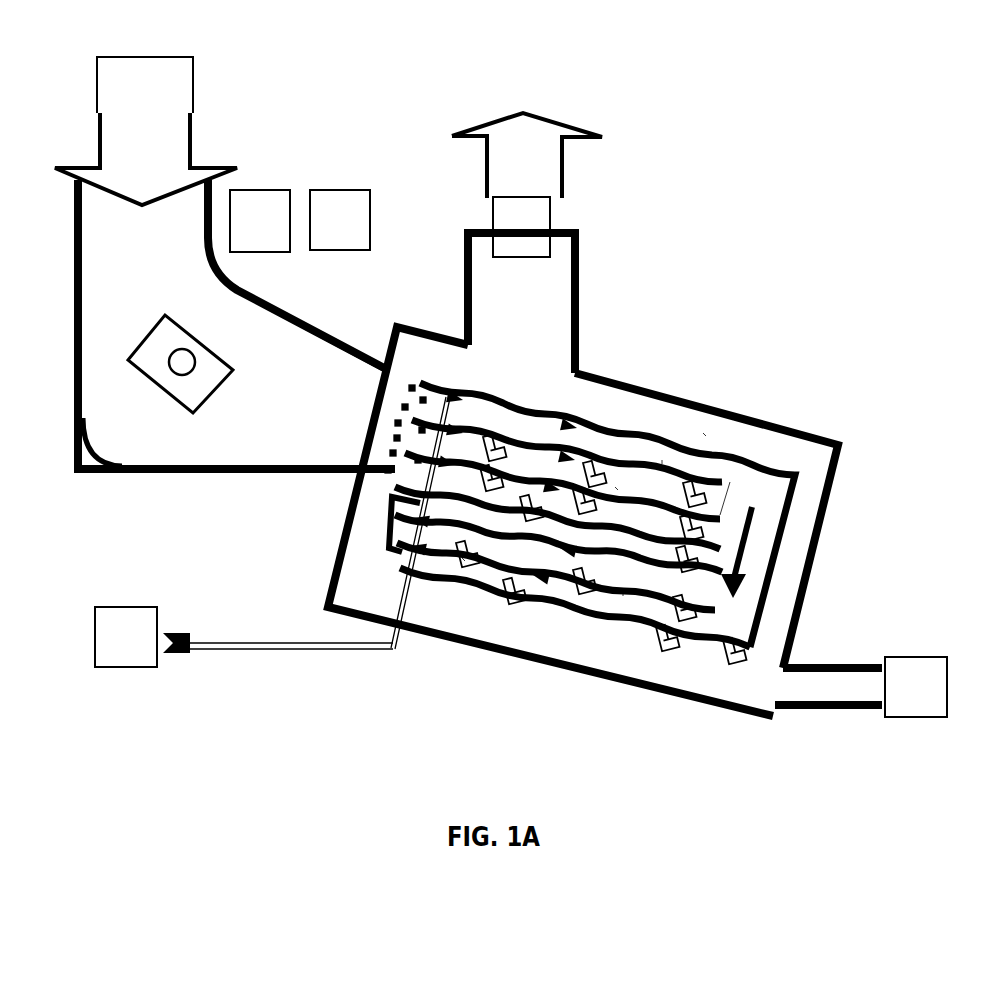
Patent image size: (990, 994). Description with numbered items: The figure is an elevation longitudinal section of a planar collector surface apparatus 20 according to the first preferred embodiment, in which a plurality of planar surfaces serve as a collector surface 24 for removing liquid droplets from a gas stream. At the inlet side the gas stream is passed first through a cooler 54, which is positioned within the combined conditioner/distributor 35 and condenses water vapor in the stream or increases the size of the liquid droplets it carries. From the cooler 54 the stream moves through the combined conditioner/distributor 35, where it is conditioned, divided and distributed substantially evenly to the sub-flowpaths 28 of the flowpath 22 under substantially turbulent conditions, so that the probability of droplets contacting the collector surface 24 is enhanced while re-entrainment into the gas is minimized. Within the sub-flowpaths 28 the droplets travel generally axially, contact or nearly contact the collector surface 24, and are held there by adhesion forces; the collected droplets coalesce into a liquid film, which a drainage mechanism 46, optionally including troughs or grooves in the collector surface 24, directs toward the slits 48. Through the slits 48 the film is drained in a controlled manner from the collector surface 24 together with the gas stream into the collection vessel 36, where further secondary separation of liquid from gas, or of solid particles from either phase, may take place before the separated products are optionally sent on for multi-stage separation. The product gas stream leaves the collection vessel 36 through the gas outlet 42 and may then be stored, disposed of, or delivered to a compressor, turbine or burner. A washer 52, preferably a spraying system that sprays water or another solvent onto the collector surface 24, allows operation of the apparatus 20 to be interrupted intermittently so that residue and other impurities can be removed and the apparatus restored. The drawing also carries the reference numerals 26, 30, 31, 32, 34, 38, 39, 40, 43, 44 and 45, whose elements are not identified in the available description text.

The planar collector surface apparatus 20 is at (690, 348).
The flowpath 22 is at (758, 537).
The collector surface 24 is at (780, 613).
The flow channel outlet 26 is at (643, 565).
The sub-flowpaths 28 is at (715, 538).
The hopper 30 is at (248, 418).
The housing wall 31 is at (370, 437).
The sensor 32 is at (180, 470).
The inlet openings 34 is at (385, 415).
The combined conditioner/distributor 35 is at (288, 367).
The collection vessel 36 is at (703, 433).
The distributor plate 38 is at (380, 392).
The flow controller 39 is at (418, 460).
The outlet duct 40 is at (861, 687).
The gas outlet 42 is at (527, 243).
The rail 43 is at (345, 562).
The flow passage 44 is at (663, 460).
The lower passage 45 is at (623, 590).
The drainage mechanism 46 is at (707, 480).
The slits 48 is at (527, 523).
The washer 52 is at (195, 640).
The cooler 54 is at (205, 345).